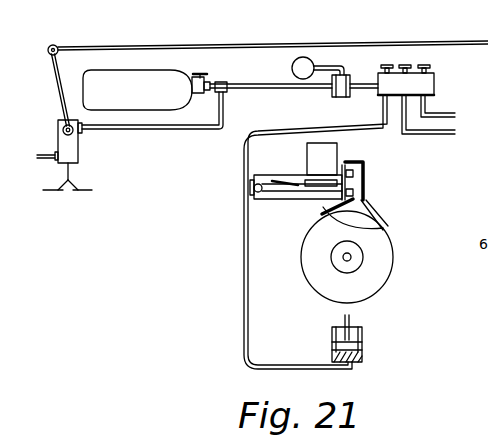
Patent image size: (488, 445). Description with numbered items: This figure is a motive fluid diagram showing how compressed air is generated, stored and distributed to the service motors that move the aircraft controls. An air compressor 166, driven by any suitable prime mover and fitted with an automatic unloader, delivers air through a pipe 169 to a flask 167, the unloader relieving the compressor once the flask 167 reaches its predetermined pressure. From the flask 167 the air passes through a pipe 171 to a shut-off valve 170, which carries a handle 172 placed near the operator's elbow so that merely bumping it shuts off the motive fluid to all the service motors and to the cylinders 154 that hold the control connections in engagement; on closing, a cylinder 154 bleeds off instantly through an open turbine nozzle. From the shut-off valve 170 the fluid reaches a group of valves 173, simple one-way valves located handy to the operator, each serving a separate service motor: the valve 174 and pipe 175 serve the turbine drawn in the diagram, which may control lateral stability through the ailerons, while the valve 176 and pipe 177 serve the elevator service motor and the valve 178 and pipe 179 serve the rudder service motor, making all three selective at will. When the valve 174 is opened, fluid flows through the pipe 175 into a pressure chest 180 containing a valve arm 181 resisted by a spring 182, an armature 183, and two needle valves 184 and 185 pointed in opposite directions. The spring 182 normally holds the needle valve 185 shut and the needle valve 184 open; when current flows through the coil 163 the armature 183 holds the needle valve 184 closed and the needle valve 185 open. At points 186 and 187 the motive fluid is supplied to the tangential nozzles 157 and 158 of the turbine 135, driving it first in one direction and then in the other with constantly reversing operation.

The turbine 135 is at (377, 246).
The cylinder 154 is at (362, 335).
The tangential nozzle 157 is at (378, 220).
The tangential nozzle 158 is at (318, 214).
The coil 163 is at (322, 159).
The air compressor 166 is at (77, 152).
The flask 167 is at (137, 90).
The pipe 169 is at (178, 129).
The shut-off valve 170 is at (340, 92).
The pipe 171 is at (252, 84).
The handle 172 is at (304, 62).
The group of valves 173 is at (406, 84).
The valve 174 is at (387, 64).
The pipe 175 is at (370, 135).
The valve 176 is at (406, 64).
The pipe 177 is at (428, 136).
The valve 178 is at (425, 64).
The pipe 179 is at (463, 124).
The pressure chest 180 is at (276, 200).
The valve arm 181 is at (291, 193).
The spring 182 is at (290, 180).
The armature 183 is at (316, 193).
The needle valve 184 is at (364, 172).
The needle valve 185 is at (363, 192).
The motive fluid supply to nozzle 186 is at (387, 228).
The motive fluid supply to nozzle 187 is at (376, 209).